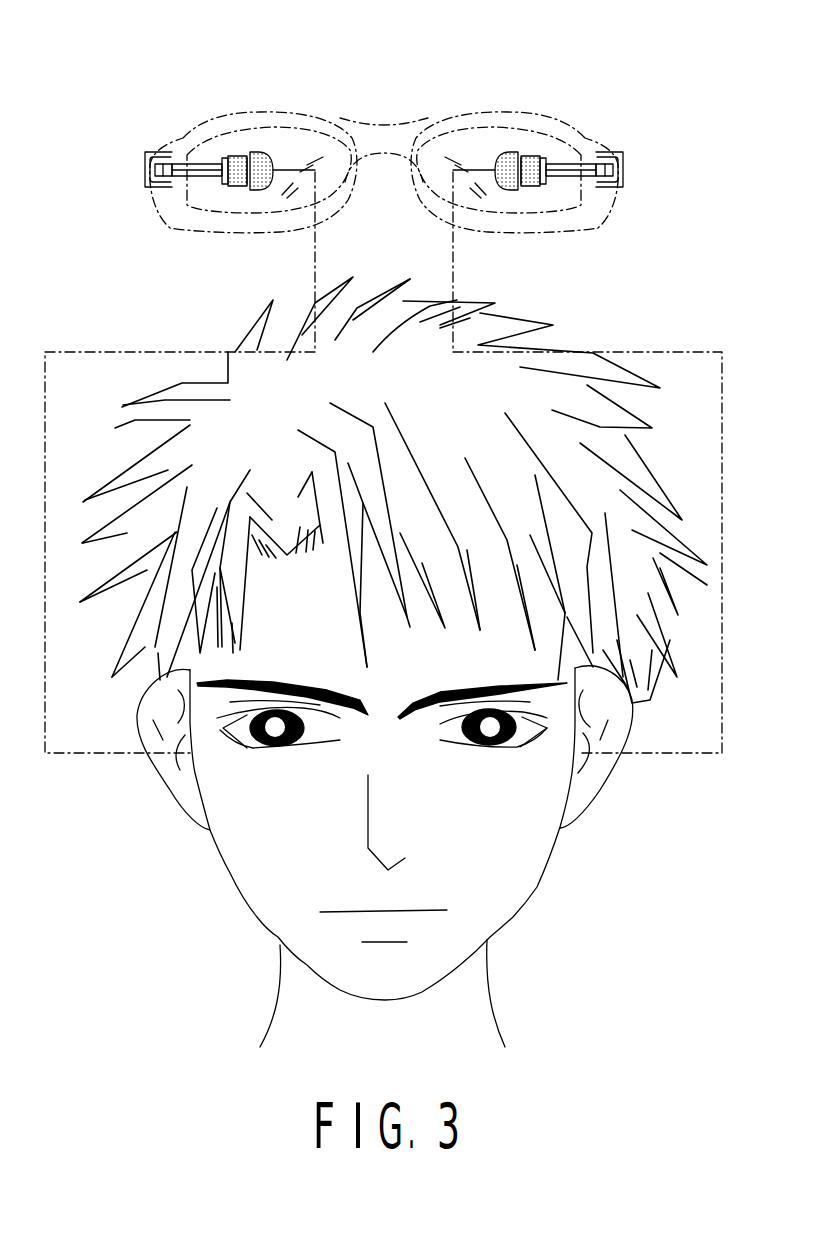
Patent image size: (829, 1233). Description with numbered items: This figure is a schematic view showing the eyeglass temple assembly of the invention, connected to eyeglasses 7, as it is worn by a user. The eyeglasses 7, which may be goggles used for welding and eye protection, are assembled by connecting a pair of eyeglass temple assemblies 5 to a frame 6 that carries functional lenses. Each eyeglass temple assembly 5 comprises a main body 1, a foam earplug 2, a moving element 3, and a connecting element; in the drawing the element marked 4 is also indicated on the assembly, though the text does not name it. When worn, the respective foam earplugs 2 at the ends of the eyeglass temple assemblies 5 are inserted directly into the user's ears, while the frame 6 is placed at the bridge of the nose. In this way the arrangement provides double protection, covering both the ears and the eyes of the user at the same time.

The main body 1 is at (187, 182).
The foam earplug 2 is at (242, 188).
The moving element 3 is at (147, 153).
The fastening member 4 is at (147, 182).
The eyeglass temple assembly 5 is at (108, 235).
The frame 6 is at (290, 104).
The eyeglasses 7 is at (407, 90).